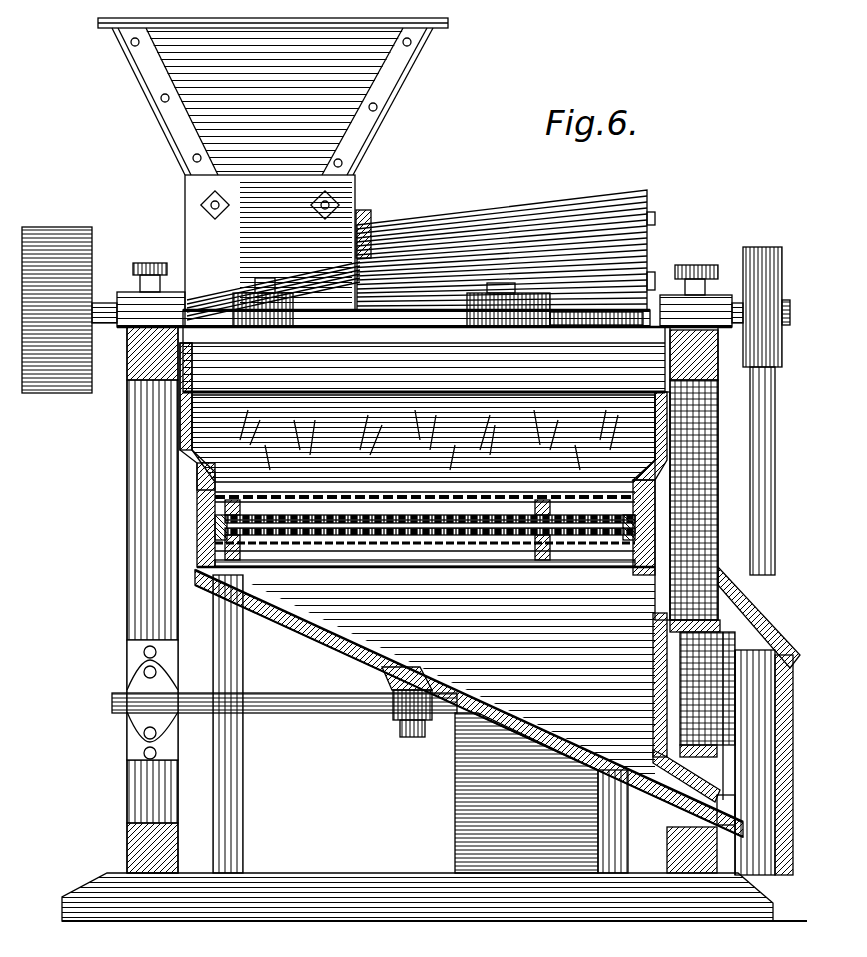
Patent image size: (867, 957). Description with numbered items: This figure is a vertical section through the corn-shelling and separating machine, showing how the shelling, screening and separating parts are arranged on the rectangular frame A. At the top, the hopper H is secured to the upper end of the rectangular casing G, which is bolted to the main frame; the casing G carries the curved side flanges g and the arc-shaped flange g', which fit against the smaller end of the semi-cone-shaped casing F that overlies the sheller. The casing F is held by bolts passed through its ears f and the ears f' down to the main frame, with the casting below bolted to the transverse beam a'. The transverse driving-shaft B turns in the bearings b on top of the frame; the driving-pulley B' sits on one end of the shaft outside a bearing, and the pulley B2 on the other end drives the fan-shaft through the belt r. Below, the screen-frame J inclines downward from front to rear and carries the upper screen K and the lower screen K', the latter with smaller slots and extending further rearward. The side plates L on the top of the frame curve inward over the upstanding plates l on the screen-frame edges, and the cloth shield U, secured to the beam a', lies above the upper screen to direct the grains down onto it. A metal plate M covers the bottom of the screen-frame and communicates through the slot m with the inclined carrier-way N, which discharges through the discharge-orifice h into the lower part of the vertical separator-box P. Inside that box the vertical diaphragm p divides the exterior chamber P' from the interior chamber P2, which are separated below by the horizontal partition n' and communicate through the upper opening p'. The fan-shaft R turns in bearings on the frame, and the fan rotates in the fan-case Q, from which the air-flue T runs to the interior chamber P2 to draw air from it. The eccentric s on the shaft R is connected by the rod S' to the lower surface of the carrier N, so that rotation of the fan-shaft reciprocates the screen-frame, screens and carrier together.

The hopper H is at (273, 96).
The rectangular casing G is at (270, 242).
The flange g' is at (373, 225).
The curved side flanges g is at (273, 285).
The semi-cone-shaped casing F is at (506, 244).
The ears f is at (511, 300).
The ears f' is at (416, 333).
The transverse beam a' is at (424, 359).
The driving-pulley B' is at (69, 296).
The driving-shaft B is at (430, 279).
The bearings b is at (118, 320).
The pulley B2 is at (780, 307).
The frame A is at (434, 624).
The side plates L is at (180, 405).
The screen-frame J is at (215, 540).
The cloth shield U is at (423, 438).
The upper screen K is at (425, 480).
The lower screen K' is at (425, 566).
The metal plate M is at (520, 560).
The slot m is at (440, 560).
The upstanding plates l is at (674, 506).
The inclined carrier-way N is at (469, 703).
The fan-shaft R is at (284, 717).
The eccentric s is at (400, 715).
The connecting-rod S' is at (418, 742).
The fan-case Q is at (541, 793).
The air-flue T is at (694, 610).
The upper opening p' is at (707, 694).
The interior chamber P2 is at (684, 685).
The horizontal partition n' is at (671, 761).
The belt r is at (770, 471).
The separator-box P is at (766, 721).
The vertical diaphragm p is at (739, 716).
The exterior chamber P' is at (775, 762).
The discharge-orifice h is at (734, 810).